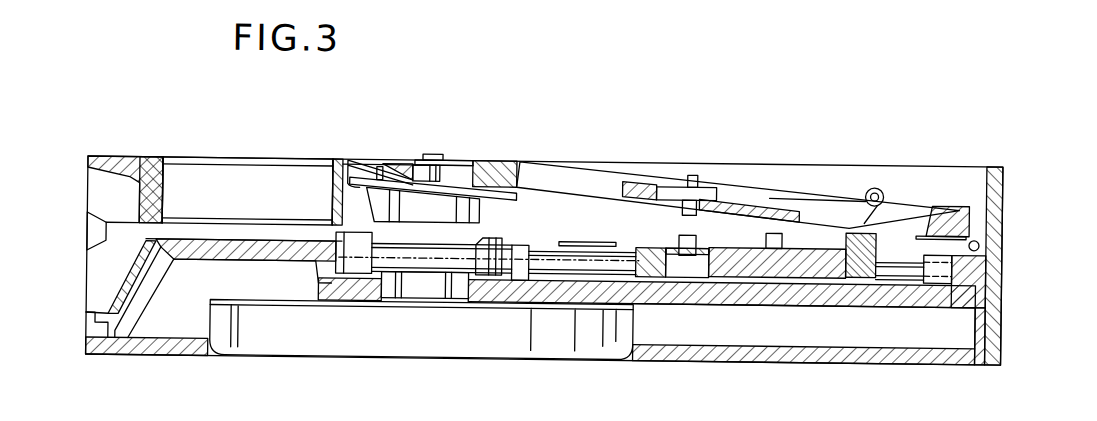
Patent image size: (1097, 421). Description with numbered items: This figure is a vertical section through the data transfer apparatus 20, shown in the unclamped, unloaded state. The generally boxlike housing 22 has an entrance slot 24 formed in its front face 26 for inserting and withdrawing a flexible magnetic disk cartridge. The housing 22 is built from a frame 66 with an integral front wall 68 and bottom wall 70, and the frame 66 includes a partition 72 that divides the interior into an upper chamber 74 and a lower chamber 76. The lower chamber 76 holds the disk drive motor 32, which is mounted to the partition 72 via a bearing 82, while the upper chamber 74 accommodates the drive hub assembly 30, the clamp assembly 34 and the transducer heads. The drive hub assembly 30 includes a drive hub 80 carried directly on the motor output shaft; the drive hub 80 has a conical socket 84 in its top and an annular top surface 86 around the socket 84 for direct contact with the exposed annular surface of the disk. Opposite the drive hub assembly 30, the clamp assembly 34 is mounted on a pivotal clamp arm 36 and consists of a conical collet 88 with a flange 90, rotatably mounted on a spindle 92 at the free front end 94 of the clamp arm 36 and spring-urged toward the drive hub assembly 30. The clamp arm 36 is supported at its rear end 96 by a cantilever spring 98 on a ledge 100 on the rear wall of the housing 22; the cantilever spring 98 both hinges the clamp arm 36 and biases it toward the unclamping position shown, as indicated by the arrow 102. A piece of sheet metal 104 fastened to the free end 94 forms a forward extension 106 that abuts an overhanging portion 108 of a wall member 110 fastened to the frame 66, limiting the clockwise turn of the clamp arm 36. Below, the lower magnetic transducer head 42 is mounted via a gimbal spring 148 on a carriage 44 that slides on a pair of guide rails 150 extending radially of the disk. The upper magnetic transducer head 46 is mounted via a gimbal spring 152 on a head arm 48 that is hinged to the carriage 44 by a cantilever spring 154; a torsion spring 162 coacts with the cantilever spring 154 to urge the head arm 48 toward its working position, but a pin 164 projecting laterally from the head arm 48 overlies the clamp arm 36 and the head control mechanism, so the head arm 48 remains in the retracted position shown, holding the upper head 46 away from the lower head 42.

The data transfer apparatus 20 is at (98, 143).
The housing 22 is at (1010, 186).
The entrance slot 24 is at (90, 223).
The front face 26 is at (88, 270).
The drive hub assembly 30 is at (520, 230).
The disk drive motor 32 is at (547, 316).
The clamp assembly 34 is at (360, 161).
The clamp arm 36 is at (639, 164).
The lower magnetic transducer head 42 is at (683, 229).
The carriage 44 is at (858, 266).
The upper magnetic transducer head 46 is at (697, 205).
The head arm 48 is at (750, 197).
The frame 66 is at (997, 316).
The front wall 68 is at (88, 163).
The bottom wall 70 is at (194, 351).
The partition 72 is at (779, 260).
The upper chamber 74 is at (967, 161).
The lower chamber 76 is at (962, 334).
The drive hub 80 is at (323, 254).
The bearing 82 is at (432, 288).
The conical socket 84 is at (500, 230).
The annular top surface 86 is at (331, 217).
The conical collet 88 is at (354, 242).
The flange 90 is at (345, 169).
The spindle 92 is at (440, 156).
The free front end 94 is at (487, 153).
The rear end 96 is at (937, 197).
The cantilever spring 98 is at (976, 247).
The ledge 100 is at (1005, 272).
The arrow 102 is at (570, 141).
The piece of sheet metal 104 is at (410, 156).
The forward extension 106 is at (397, 173).
The overhanging portion 108 is at (380, 173).
The wall member 110 is at (148, 159).
The gimbal spring 148 is at (687, 273).
The guide rails 150 is at (908, 265).
The gimbal spring 152 is at (700, 180).
The cantilever spring 154 is at (793, 242).
The torsion spring 162 is at (875, 178).
The pin 164 is at (692, 168).